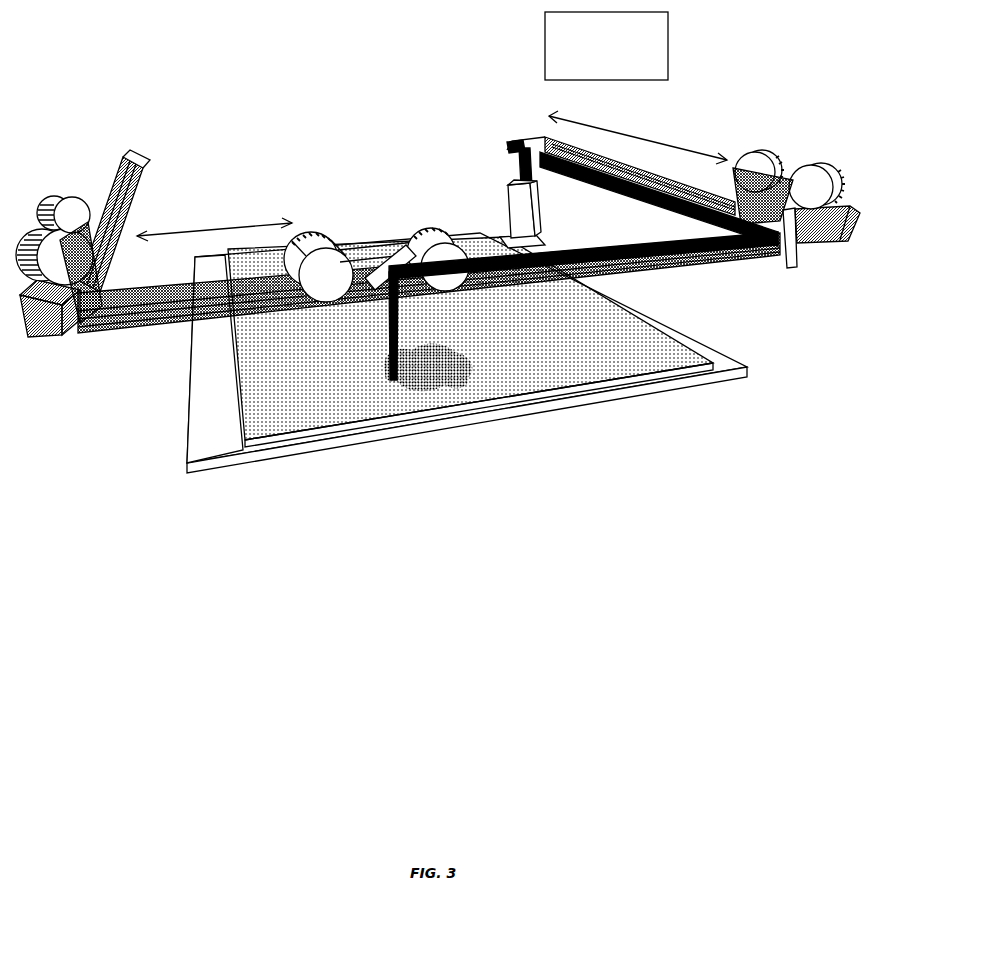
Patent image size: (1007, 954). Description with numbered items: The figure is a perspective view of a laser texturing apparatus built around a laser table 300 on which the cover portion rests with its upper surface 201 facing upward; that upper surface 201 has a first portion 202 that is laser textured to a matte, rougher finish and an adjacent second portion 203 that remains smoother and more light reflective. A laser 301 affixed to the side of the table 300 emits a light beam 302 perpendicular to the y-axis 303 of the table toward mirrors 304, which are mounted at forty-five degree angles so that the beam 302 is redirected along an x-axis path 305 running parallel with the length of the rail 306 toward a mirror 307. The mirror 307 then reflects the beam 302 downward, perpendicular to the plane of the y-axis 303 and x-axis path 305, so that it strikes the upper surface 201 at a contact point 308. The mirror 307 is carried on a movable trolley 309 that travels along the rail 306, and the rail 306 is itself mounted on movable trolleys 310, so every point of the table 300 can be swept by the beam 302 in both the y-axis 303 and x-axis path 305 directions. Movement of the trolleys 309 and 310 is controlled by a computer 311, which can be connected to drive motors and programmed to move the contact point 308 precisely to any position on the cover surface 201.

The upper surface 201 is at (621, 361).
The first portion 202 is at (290, 405).
The second portion 203 is at (433, 392).
The laser table 300 is at (750, 371).
The laser 301 is at (507, 182).
The light beam 302 is at (730, 254).
The y-axis 303 is at (642, 178).
The mirrors 304 is at (517, 146).
The x-axis path 305 is at (214, 223).
The rail 306 is at (502, 232).
The mirror 307 is at (398, 228).
The contact point 308 is at (383, 380).
The movable trolley 309 is at (363, 240).
The movable trolleys 310 is at (95, 197).
The computer 311 is at (606, 46).